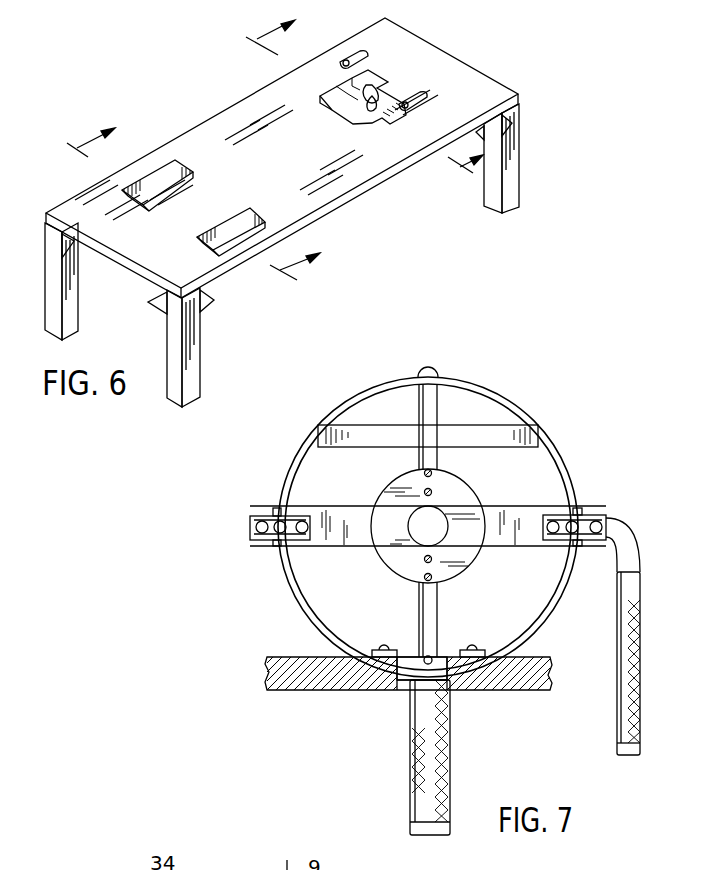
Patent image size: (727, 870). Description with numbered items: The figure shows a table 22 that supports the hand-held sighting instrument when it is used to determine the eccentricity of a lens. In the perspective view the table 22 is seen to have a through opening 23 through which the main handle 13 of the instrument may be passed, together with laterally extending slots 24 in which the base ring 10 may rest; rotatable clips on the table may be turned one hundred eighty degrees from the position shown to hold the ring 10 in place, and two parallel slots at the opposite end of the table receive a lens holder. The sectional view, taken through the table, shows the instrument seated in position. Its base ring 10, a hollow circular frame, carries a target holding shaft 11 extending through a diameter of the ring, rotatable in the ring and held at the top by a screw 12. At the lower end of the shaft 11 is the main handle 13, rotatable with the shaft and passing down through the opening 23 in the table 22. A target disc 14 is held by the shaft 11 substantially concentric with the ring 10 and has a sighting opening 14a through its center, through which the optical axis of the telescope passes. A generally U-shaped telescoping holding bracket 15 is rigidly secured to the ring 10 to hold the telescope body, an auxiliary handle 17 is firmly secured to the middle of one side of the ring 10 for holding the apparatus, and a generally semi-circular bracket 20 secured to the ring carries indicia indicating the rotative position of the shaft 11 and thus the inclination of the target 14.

In FIG. 7, the base ring 10 is at (515, 406).
In FIG. 7, the target holding shaft 11 is at (432, 410).
In FIG. 7, the screw 12 is at (433, 368).
In FIG. 7, the main handle 13 is at (428, 730).
In FIG. 7, the target disc 14 is at (458, 490).
In FIG. 7, the sighting opening 14a is at (418, 530).
In FIG. 7, the telescoping holding bracket 15 is at (550, 510).
In FIG. 7, the auxiliary handle 17 is at (642, 632).
In FIG. 7, the semi-circular bracket 20 is at (530, 447).
In FIG. 6, the table 22 is at (354, 182).
In FIG. 7, the table 22 is at (337, 680).
In FIG. 6, the through opening 23 is at (382, 83).
In FIG. 7, the through opening 23 is at (440, 660).
In FIG. 6, the laterally extending slots 24 is at (343, 92).
In FIG. 7, the laterally extending slots 24 is at (408, 658).